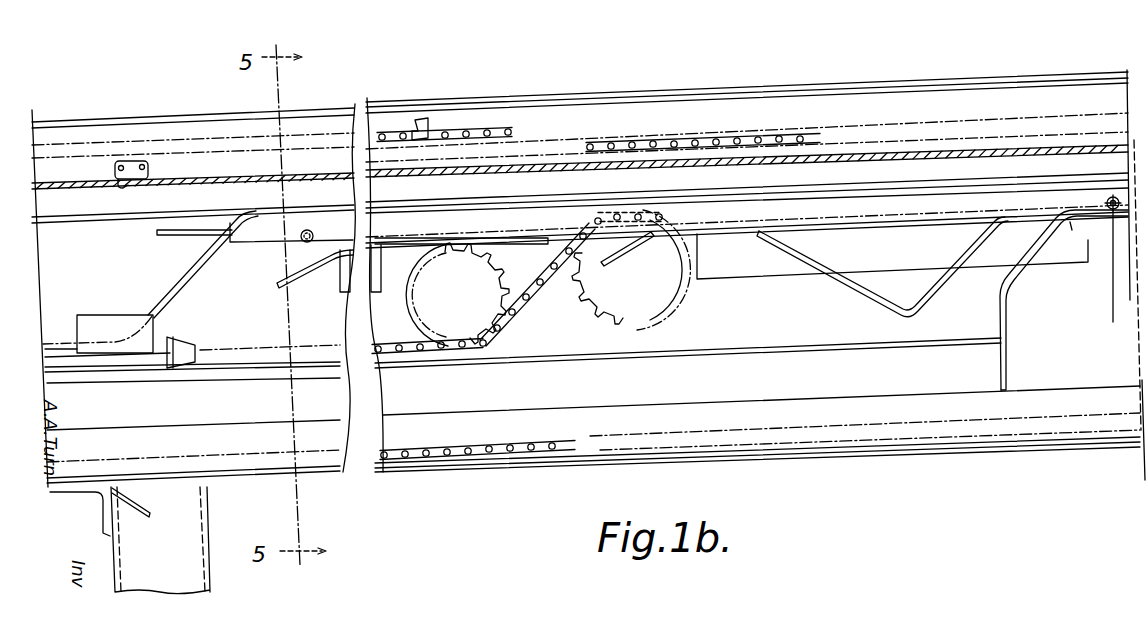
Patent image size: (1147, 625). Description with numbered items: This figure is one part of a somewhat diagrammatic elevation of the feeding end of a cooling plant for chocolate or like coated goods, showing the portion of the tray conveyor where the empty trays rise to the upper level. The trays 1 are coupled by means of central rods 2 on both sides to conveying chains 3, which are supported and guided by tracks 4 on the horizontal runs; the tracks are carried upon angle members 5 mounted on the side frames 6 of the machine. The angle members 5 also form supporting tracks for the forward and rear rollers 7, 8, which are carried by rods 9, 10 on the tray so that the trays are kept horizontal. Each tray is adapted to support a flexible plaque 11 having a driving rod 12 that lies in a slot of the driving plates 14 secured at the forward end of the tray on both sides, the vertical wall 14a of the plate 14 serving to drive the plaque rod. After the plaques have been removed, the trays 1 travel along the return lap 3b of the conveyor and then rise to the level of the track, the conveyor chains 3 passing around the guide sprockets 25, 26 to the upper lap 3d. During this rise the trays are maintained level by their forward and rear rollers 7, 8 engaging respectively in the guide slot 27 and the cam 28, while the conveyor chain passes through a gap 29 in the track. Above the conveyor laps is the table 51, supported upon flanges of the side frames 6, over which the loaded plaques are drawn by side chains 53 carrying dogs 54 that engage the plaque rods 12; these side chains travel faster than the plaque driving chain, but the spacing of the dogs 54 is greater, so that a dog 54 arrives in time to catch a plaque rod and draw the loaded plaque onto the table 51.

The tray 1 is at (412, 232).
The central rod 2 is at (662, 210).
The conveying chain 3 is at (534, 293).
The return lap 3b is at (517, 455).
The upper lap 3d is at (1070, 227).
The track 4 is at (740, 225).
The angle member 5 is at (512, 240).
The side frame 6 is at (933, 323).
The forward roller 7 is at (1110, 280).
The rear roller 8 is at (307, 243).
The rod 9 is at (1108, 198).
The rod 10 is at (305, 268).
The flexible plaque 11 is at (82, 186).
The driving rod 12 is at (147, 187).
The driving plate 14 is at (120, 327).
The vertical wall 14a is at (157, 327).
The guide sprocket 25 is at (476, 310).
The guide sprocket 26 is at (618, 300).
The guide slot 27 is at (982, 277).
The cam 28 is at (200, 263).
The gap 29 is at (560, 236).
The table 51 is at (800, 158).
The side chain 53 is at (378, 133).
The dog 54 is at (430, 120).